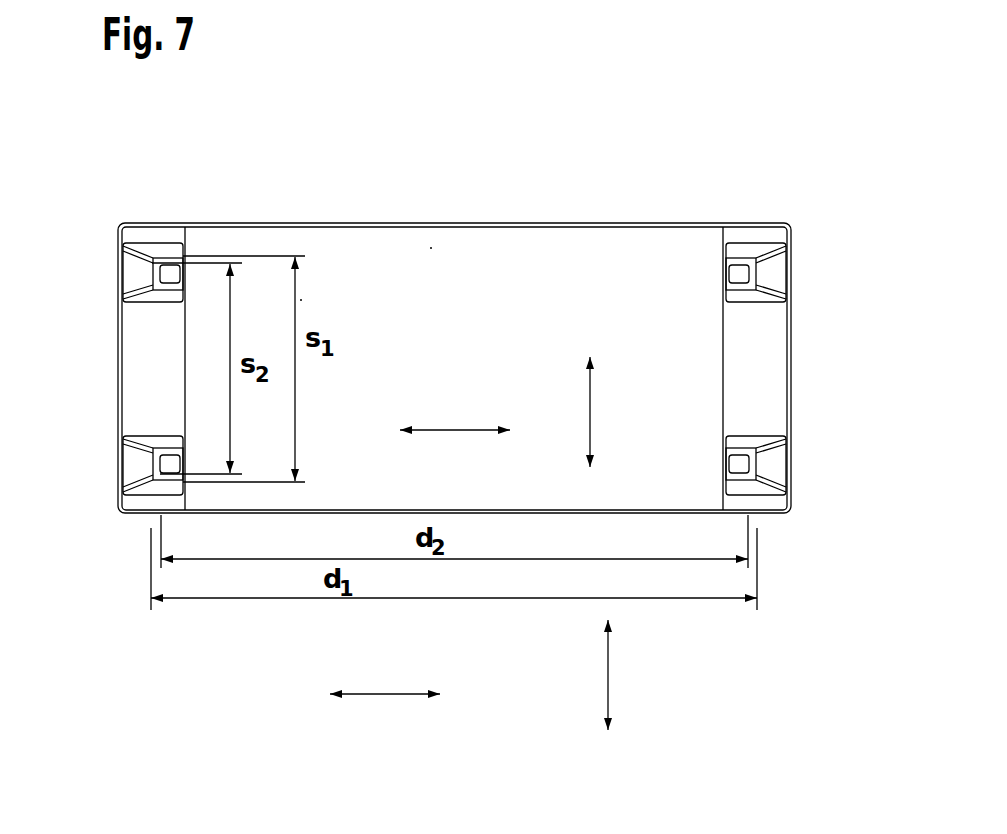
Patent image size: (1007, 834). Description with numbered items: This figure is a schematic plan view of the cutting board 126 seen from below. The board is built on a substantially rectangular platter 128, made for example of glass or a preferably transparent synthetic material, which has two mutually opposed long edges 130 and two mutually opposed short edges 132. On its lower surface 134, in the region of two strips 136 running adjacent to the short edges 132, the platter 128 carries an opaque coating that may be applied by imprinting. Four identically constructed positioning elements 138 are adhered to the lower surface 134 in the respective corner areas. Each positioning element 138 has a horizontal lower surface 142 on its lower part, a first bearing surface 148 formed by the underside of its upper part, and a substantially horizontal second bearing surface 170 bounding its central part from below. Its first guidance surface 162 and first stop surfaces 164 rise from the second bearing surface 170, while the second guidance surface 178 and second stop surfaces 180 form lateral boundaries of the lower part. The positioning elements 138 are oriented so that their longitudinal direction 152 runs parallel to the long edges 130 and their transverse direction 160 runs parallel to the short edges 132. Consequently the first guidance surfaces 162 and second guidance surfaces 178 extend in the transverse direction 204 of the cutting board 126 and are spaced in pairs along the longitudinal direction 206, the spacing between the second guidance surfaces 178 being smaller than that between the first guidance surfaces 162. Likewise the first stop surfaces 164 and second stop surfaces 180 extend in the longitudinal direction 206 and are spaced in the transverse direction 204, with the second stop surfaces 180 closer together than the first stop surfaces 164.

The cutting board 126 is at (597, 222).
The platter 128 is at (437, 248).
The long edges 130 is at (502, 222).
The short edges 132 is at (118, 355).
The lower surface 134 is at (372, 300).
The strips 136 is at (140, 412).
The positioning elements 138 is at (123, 232).
The lower surface 142 is at (733, 470).
The first bearing surface 148 is at (778, 472).
The longitudinal direction 152 is at (385, 692).
The transverse direction 160 is at (610, 677).
The first guidance surface 162 is at (150, 266).
The first stop surface 164 is at (163, 256).
The second bearing surface 170 is at (752, 458).
The second guidance surface 178 is at (156, 276).
The second stop surface 180 is at (179, 262).
The transverse direction 204 is at (592, 412).
The longitudinal direction 206 is at (455, 428).